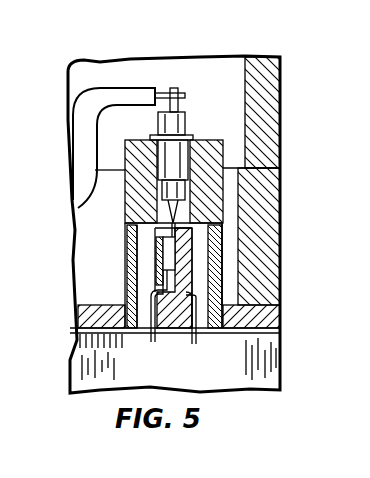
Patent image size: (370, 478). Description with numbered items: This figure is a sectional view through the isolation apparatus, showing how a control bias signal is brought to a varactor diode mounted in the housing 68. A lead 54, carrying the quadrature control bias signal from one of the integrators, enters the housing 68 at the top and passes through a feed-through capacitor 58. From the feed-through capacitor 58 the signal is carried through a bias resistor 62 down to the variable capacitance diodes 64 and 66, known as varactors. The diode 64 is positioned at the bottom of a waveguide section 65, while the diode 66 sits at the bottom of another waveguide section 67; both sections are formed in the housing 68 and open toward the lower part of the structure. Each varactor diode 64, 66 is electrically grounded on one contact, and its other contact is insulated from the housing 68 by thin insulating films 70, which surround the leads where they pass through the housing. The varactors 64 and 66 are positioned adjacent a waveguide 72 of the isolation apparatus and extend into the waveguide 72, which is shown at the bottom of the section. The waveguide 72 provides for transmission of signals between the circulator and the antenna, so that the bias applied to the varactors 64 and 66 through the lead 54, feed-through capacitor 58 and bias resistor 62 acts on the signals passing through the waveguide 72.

The lead 54 is at (175, 87).
The feed-through capacitor 58 is at (188, 125).
The housing 68 is at (125, 213).
The bias resistor 62 is at (166, 249).
The waveguide section 65 is at (147, 280).
The waveguide section 67 is at (203, 282).
The variable capacitance diode 64 is at (143, 333).
The thin insulating film 70 is at (153, 342).
The variable capacitance diode 66 is at (196, 344).
The waveguide 72 is at (264, 333).